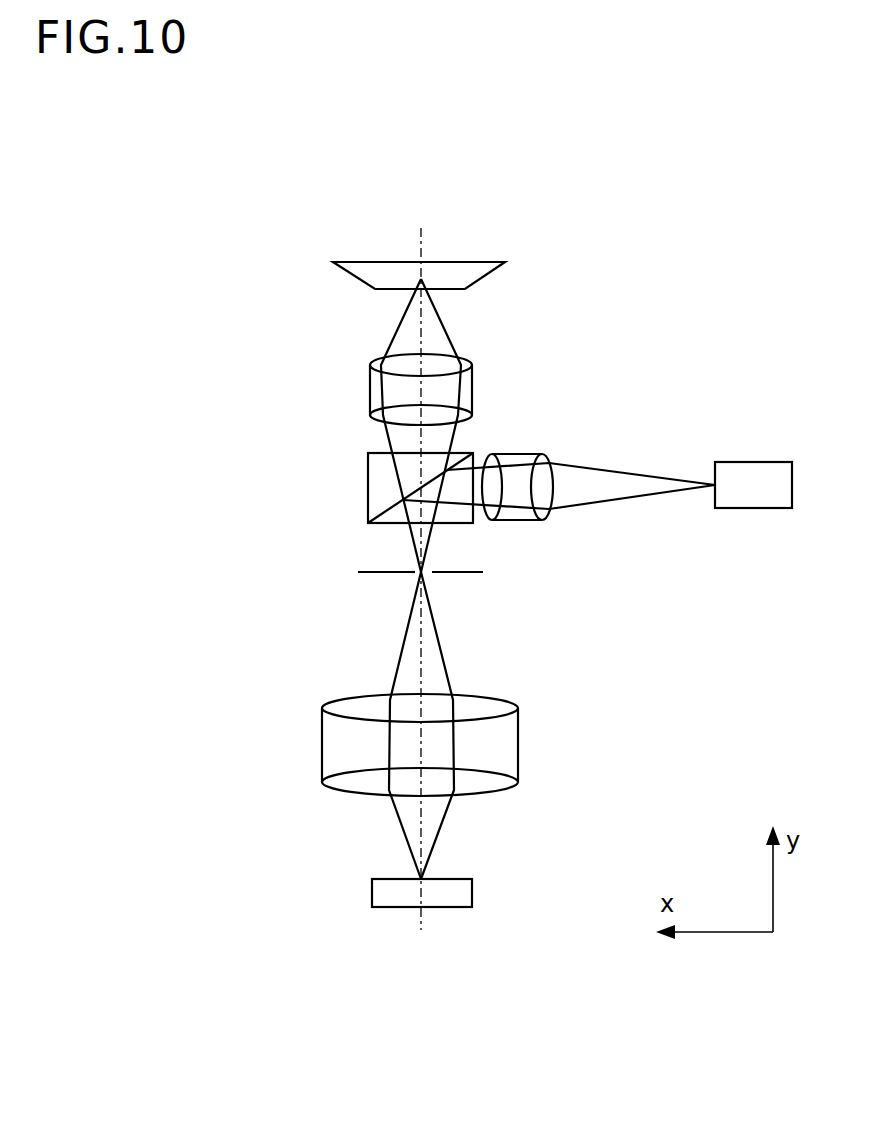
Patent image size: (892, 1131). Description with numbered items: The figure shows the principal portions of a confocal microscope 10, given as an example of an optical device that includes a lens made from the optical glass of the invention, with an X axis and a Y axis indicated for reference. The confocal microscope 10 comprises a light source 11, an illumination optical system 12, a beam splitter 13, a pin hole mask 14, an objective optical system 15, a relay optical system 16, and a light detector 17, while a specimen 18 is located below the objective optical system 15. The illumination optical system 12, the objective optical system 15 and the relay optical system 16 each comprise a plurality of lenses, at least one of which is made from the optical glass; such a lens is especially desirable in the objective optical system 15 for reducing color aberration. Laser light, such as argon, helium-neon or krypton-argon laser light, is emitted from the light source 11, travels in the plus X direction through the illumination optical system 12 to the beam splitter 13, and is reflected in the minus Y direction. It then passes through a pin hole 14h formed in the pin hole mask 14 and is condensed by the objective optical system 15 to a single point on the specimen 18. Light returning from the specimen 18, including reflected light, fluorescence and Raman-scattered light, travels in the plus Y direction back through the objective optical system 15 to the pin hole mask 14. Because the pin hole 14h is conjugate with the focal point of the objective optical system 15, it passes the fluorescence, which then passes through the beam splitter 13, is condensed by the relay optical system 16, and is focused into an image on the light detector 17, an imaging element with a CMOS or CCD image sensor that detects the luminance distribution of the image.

The confocal microscope 10 is at (170, 252).
The light source 11 is at (755, 508).
The illumination optical system 12 is at (548, 518).
The beam splitter 13 is at (378, 497).
The pin hole mask 14 is at (470, 574).
The pin hole 14h is at (418, 574).
The objective optical system 15 is at (505, 709).
The relay optical system 16 is at (468, 363).
The light detector 17 is at (358, 280).
The specimen 18 is at (450, 879).